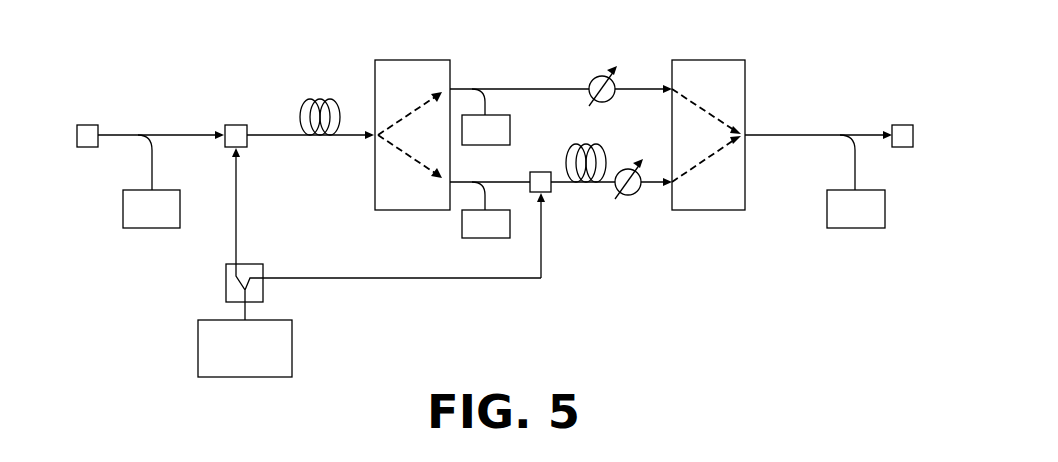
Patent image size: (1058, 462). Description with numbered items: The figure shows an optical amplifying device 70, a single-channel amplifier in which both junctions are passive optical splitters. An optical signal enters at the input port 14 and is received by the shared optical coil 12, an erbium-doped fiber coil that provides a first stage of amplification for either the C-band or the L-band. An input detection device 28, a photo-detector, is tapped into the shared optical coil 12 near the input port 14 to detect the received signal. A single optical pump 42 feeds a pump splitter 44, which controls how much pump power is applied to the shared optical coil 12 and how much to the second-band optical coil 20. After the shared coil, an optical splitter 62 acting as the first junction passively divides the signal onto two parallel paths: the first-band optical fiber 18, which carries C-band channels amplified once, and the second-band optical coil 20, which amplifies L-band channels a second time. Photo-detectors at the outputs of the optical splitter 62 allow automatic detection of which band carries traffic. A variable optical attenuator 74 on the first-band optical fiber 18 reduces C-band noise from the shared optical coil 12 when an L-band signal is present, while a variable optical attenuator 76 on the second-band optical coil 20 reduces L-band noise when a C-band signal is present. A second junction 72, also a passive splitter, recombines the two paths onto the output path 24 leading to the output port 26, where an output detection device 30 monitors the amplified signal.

The input port 14 is at (88, 125).
The input detection device 28 is at (123, 210).
The shared optical coil 12 is at (272, 133).
The pump splitter 44 is at (226, 290).
The optical pump 42 is at (198, 356).
The optical splitter 62 is at (375, 185).
The first-band optical fiber 18 is at (530, 88).
The variable optical attenuator 74 is at (589, 78).
The second-band optical coil 20 is at (573, 187).
The variable optical attenuator 76 is at (627, 197).
The second junction 72 is at (745, 90).
The output path 24 is at (795, 134).
The output port 26 is at (903, 125).
The output detection device 30 is at (827, 210).
The optical amplifying device 70 is at (727, 308).